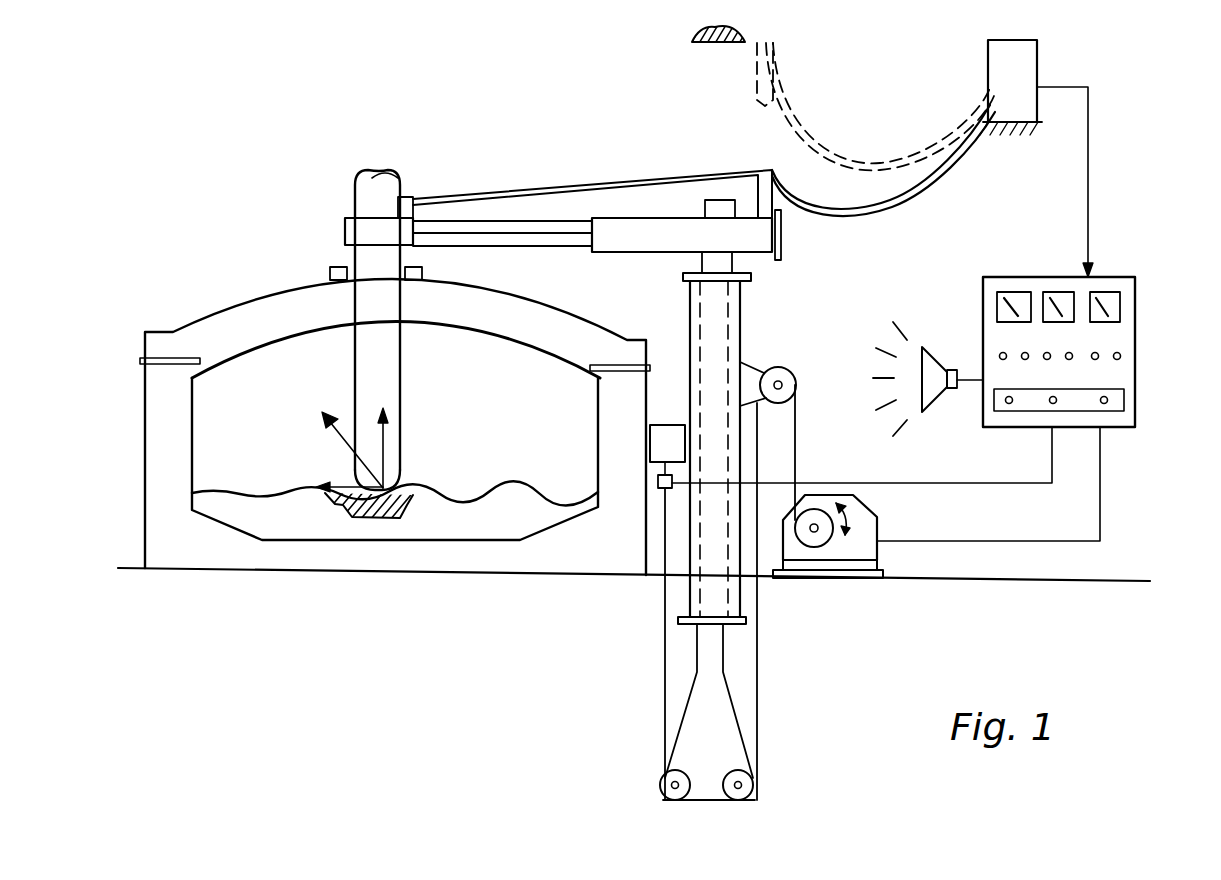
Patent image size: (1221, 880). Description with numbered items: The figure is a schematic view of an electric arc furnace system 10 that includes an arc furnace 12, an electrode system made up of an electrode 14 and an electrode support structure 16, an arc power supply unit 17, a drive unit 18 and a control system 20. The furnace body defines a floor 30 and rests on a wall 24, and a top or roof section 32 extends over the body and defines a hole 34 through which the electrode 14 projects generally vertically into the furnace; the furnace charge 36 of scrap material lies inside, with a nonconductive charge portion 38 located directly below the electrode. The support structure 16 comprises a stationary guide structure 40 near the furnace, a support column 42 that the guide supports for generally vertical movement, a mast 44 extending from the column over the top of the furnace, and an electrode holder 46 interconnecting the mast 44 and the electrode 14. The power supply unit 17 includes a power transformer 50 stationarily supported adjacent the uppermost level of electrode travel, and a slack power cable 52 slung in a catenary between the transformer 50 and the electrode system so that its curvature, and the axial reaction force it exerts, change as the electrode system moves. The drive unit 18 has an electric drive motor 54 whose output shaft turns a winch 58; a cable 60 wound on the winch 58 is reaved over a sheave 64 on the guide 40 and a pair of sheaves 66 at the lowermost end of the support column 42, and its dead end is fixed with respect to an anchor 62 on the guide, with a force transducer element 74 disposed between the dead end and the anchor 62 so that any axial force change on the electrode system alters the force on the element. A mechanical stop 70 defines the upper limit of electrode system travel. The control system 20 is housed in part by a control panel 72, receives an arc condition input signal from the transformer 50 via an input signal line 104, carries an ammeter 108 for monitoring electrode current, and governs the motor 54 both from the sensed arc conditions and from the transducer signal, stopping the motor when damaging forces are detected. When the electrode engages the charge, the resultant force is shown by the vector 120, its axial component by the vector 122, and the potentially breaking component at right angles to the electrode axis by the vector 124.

The arc furnace system 10 is at (297, 155).
The arc furnace 12 is at (143, 435).
The electrode 14 is at (400, 362).
The electrode support structure 16 is at (798, 246).
The arc power supply unit 17 is at (1055, 69).
The drive unit 18 is at (806, 478).
The control system 20 is at (1109, 268).
The furnace sidewall 24 is at (145, 492).
The floor 30 is at (272, 570).
The top or roof section 32 is at (553, 300).
The hole 34 is at (352, 268).
The furnace charge 36 is at (488, 496).
The nonconductive charge portion 38 is at (410, 512).
The stationary guide structure 40 is at (737, 337).
The support column 42 is at (733, 265).
The mast 44 is at (545, 224).
The electrode holder 46 is at (347, 228).
The power transformer 50 is at (1022, 98).
The power cable 52 is at (619, 182).
The electric drive motor 54 is at (872, 522).
The winch 58 is at (818, 546).
The cable 60 is at (797, 447).
The anchor 62 is at (668, 428).
The sheave 64 is at (794, 378).
The pair of sheaves 66 is at (673, 798).
The mechanical stop 70 is at (690, 38).
The control panel 72 is at (1125, 348).
The force transducer element 74 is at (658, 492).
The input signal line 104 is at (1090, 162).
The ammeter 108 is at (1122, 305).
The resultant force vector 120 is at (324, 435).
The axial component force vector 122 is at (393, 445).
The potential breaking force component vector 124 is at (325, 482).